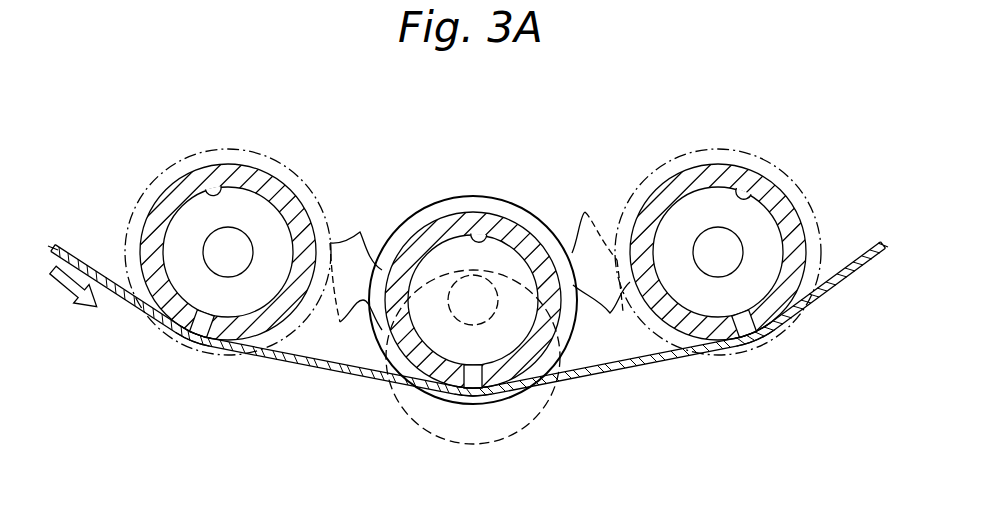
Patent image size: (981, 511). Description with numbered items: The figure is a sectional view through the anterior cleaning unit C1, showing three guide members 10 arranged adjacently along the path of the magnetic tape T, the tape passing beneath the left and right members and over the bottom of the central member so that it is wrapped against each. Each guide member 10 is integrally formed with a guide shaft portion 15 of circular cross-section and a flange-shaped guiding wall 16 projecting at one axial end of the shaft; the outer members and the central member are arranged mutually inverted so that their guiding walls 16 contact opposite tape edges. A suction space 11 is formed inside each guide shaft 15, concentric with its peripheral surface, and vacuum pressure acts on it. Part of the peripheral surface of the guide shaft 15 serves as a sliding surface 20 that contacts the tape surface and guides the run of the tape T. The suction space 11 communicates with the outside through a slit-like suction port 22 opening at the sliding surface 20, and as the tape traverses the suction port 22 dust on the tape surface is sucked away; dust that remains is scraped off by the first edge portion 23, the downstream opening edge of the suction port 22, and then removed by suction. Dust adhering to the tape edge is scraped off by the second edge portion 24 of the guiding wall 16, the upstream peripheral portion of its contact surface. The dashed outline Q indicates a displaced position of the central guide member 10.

The guide member 10 is at (300, 146).
The suction space 11 is at (210, 197).
The guide shaft portion 15 is at (480, 271).
The guiding wall 16 is at (474, 268).
The sliding surface 20 is at (181, 331).
The suction port 22 is at (204, 318).
The first edge portion 23 is at (200, 344).
The second edge portion 24 is at (133, 307).
The magnetic tape T is at (318, 371).
The displaced position Q is at (560, 405).
The anterior cleaning unit C1 is at (244, 408).